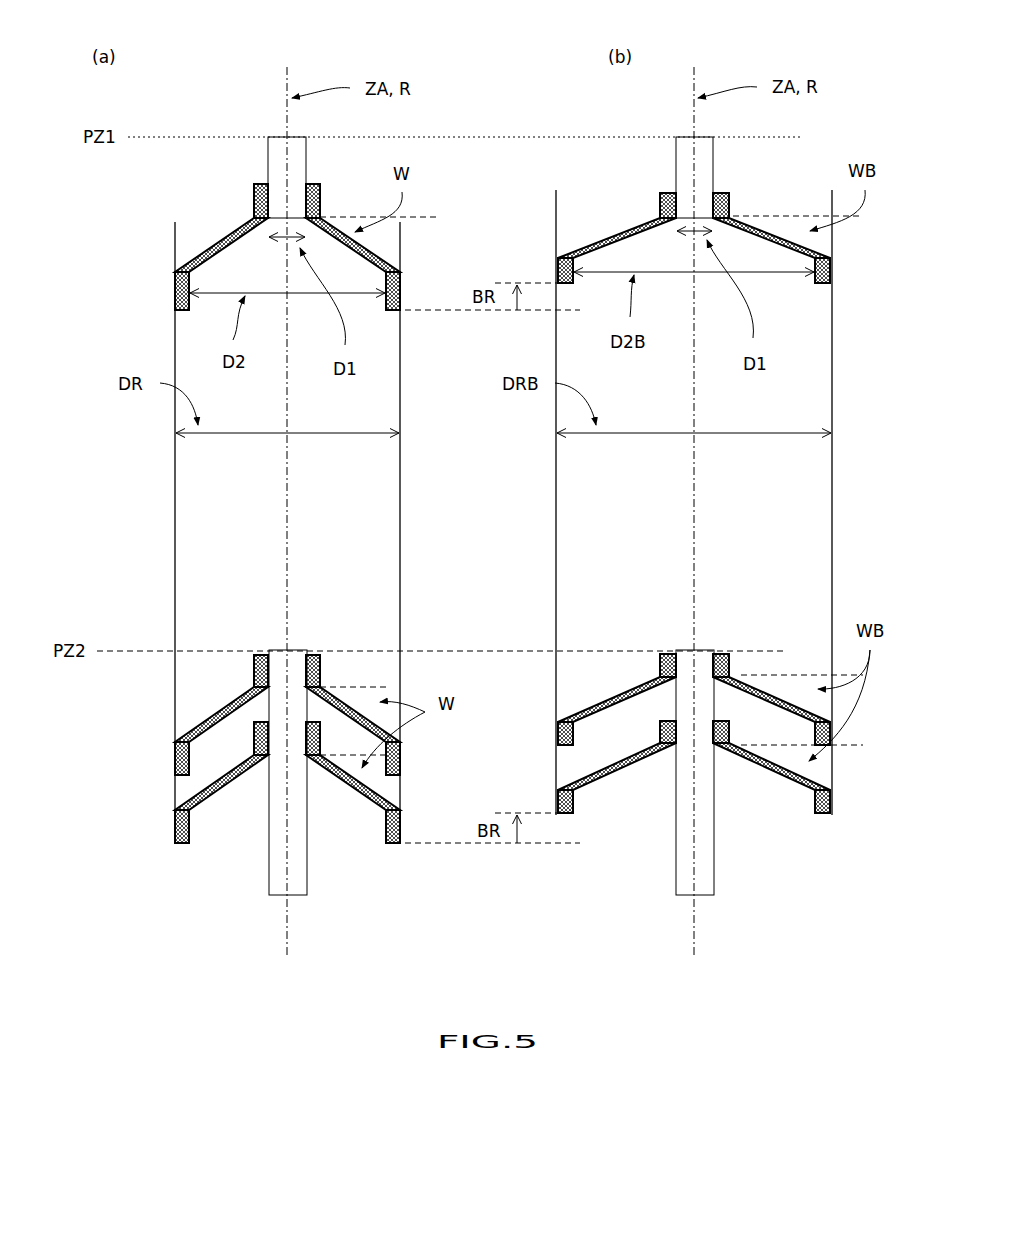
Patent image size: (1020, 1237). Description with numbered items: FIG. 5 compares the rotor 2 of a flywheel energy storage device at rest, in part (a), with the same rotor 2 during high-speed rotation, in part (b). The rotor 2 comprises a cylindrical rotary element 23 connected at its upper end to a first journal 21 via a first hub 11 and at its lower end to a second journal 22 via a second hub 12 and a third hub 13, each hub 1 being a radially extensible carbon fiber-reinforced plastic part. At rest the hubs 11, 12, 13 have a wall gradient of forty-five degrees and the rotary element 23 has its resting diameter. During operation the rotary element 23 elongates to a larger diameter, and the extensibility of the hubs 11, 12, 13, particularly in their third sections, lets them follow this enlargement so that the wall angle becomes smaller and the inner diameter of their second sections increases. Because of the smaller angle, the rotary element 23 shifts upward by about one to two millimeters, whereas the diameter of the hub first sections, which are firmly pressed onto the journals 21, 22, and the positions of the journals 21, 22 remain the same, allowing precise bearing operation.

The hub 1 is at (435, 518).
The first hub 11 is at (215, 235).
The second hub 12 is at (173, 820).
The third hub 13 is at (210, 715).
The rotor 2 is at (115, 440).
The first journal 21 is at (262, 153).
The second journal 22 is at (265, 880).
The rotary element 23 is at (173, 527).